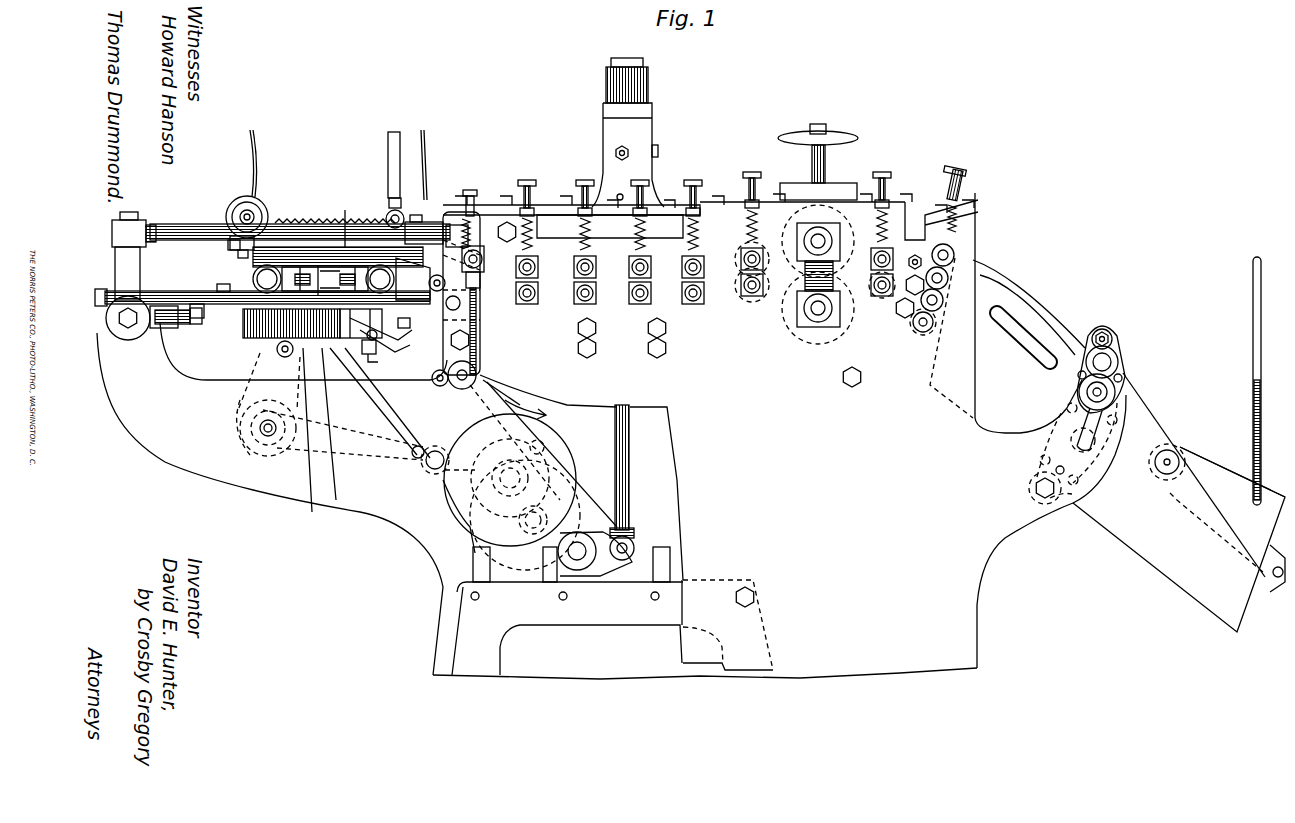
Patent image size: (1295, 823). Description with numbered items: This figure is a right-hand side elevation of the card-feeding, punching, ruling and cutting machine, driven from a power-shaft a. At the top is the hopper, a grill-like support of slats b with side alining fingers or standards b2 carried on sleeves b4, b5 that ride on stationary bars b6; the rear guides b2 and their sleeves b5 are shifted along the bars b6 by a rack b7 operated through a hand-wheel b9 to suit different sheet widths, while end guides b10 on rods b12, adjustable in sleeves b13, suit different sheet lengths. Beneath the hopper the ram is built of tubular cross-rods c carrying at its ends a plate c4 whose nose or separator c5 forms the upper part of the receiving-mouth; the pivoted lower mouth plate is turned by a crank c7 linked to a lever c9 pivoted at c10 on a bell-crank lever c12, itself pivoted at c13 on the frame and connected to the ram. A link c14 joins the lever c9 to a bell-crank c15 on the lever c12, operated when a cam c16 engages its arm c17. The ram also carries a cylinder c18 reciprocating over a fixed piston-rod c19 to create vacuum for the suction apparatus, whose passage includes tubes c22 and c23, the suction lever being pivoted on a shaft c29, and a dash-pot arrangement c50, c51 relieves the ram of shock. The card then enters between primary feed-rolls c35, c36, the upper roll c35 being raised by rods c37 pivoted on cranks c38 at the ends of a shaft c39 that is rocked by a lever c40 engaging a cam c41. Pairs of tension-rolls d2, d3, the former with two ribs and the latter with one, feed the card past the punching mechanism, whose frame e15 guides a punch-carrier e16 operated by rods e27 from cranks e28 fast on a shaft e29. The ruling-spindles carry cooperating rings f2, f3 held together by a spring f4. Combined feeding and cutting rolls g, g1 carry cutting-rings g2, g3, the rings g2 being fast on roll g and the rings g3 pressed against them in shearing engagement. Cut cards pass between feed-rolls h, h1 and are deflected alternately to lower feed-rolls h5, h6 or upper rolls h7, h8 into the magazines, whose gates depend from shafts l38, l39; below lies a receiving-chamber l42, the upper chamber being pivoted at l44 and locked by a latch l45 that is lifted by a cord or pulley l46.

The power-shaft a is at (505, 472).
The slats b is at (346, 223).
The side alining fingers or standards b2 is at (254, 162).
The sleeve b4 is at (426, 220).
The sleeve b5 is at (230, 244).
The stationary tubes or bars b6 is at (176, 228).
The rack b7 is at (300, 224).
The hand-wheel b9 is at (238, 208).
The end guides or standards b10 is at (387, 140).
The rods b12 is at (386, 218).
The sleeves b13 is at (388, 205).
The cross-rods c is at (262, 281).
The plate c4 is at (319, 280).
The nose or separator c5 is at (466, 252).
The crank c7 is at (420, 279).
The lever c9 is at (262, 392).
The pivot c10 is at (285, 357).
The bell-crank lever c12 is at (268, 368).
The pivot c13 is at (260, 431).
The link c14 is at (335, 505).
The bell-crank c15 is at (420, 458).
The cam c16 is at (567, 440).
The arm c17 is at (450, 522).
The cylinder c18 is at (247, 332).
The piston-rod c19 is at (203, 322).
The tube c22 is at (383, 343).
The tube c23 is at (377, 355).
The shaft c29 is at (461, 280).
The upper feed-roll c35 is at (483, 262).
The lower feed-roll c36 is at (480, 285).
The rods c37 is at (482, 328).
The cranks c38 is at (478, 382).
The shaft c39 is at (436, 376).
The lever c40 is at (522, 404).
The cam c41 is at (565, 470).
The dash-pot arrangement c50 is at (220, 288).
The dash-pot arrangement c51 is at (166, 290).
The tension-roll d2 is at (537, 291).
The tension-roll d3 is at (537, 264).
The frame e15 is at (652, 90).
The punch-carrier e16 is at (603, 157).
The rods e27 is at (632, 462).
The cranks e28 is at (608, 568).
The shaft e29 is at (580, 550).
The rings f2 is at (738, 262).
The rings f3 is at (742, 300).
The spring f4 is at (750, 246).
The upper roll g is at (826, 240).
The lower roll g1 is at (820, 310).
The cutting-rings g2 is at (786, 236).
The cutting-rings g3 is at (786, 316).
The feed-roll h is at (874, 262).
The feed-roll h1 is at (881, 300).
The feed-roll h5 is at (934, 324).
The feed-roll h6 is at (945, 300).
The roll h7 is at (955, 255).
The roll h8 is at (949, 276).
The shaft l38 is at (1108, 362).
The shaft l39 is at (1090, 440).
The extension or receiving-chamber l42 is at (1227, 478).
The pivot l44 is at (1170, 462).
The latch l45 is at (1278, 582).
The cord or pulley l46 is at (1254, 375).